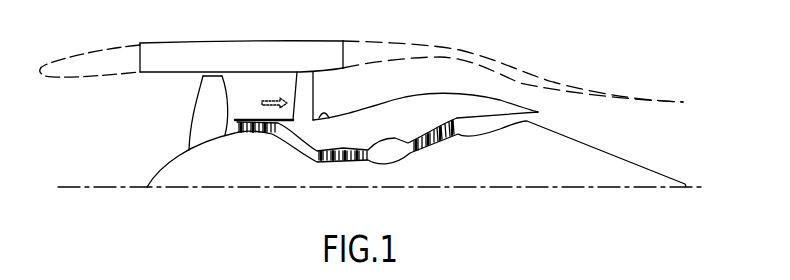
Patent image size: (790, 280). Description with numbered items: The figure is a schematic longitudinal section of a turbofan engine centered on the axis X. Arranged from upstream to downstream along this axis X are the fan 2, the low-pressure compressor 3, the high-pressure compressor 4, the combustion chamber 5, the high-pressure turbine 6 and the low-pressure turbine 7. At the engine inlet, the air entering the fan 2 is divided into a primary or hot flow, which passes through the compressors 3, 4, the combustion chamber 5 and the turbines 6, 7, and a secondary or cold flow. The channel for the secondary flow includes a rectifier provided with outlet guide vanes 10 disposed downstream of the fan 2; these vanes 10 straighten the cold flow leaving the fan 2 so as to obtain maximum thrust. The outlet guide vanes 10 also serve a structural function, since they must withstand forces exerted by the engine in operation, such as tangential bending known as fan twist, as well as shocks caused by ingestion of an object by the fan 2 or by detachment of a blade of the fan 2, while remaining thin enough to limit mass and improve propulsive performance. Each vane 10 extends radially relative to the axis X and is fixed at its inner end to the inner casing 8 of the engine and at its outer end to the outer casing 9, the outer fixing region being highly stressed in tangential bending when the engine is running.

The fan 2 is at (213, 72).
The low-pressure compressor 3 is at (257, 142).
The high-pressure compressor 4 is at (340, 168).
The combustion chamber 5 is at (388, 126).
The high-pressure turbine 6 is at (425, 160).
The low-pressure turbine 7 is at (448, 106).
The inner casing 8 is at (328, 118).
The outer casing 9 is at (274, 80).
The outlet guide vanes 10 is at (313, 91).
The axis X is at (90, 185).